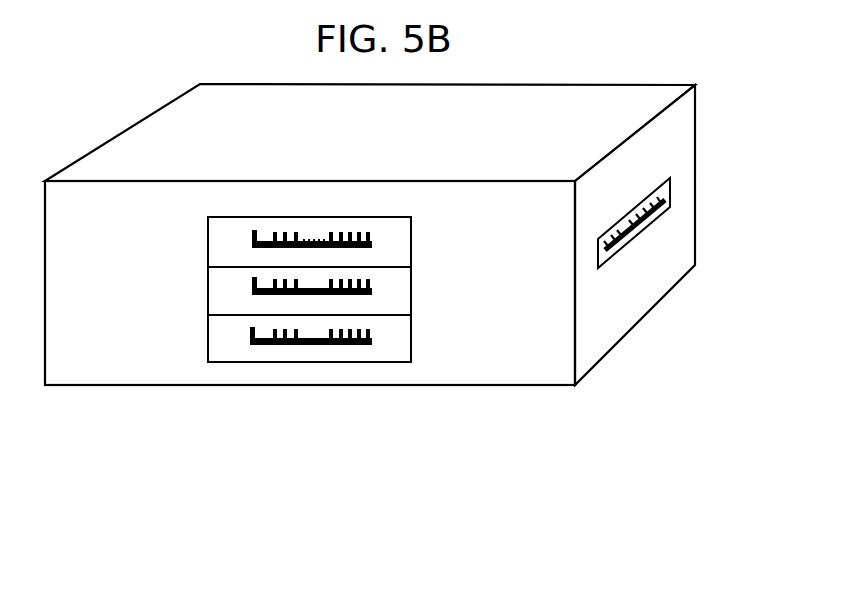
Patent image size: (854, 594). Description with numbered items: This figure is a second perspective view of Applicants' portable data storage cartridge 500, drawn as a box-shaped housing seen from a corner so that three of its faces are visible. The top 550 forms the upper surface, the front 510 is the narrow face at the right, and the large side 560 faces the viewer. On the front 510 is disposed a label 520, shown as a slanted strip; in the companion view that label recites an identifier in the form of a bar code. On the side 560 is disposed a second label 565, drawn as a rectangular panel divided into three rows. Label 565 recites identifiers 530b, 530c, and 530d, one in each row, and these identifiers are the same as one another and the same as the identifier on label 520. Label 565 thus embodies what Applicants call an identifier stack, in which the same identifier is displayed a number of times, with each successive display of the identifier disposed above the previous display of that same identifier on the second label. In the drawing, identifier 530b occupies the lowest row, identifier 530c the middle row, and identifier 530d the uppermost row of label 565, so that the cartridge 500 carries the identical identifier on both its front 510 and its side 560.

The portable data storage cartridge 500 is at (311, 440).
The front 510 is at (635, 235).
The label 520 is at (660, 229).
The identifier 530b is at (353, 346).
The identifier 530c is at (310, 296).
The identifier 530d is at (261, 248).
The top 550 is at (370, 132).
The side 560 is at (310, 330).
The label 565 is at (414, 371).